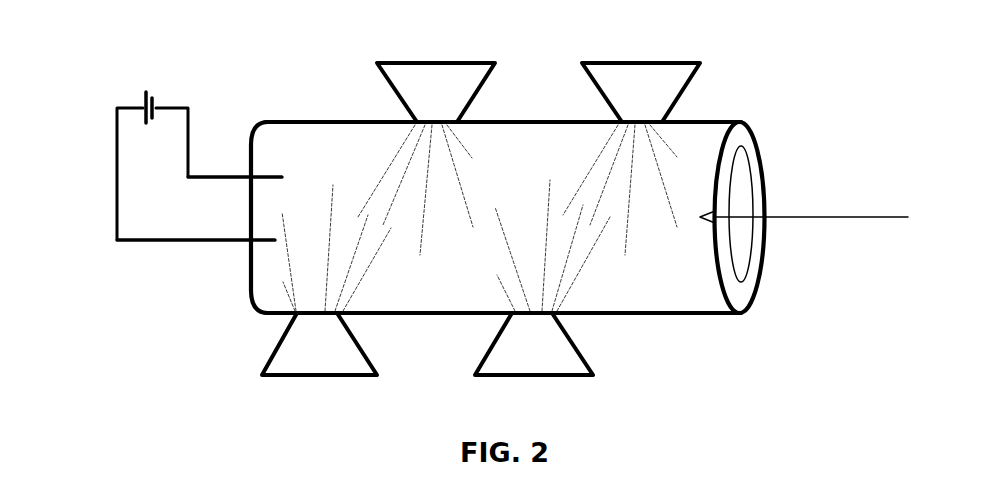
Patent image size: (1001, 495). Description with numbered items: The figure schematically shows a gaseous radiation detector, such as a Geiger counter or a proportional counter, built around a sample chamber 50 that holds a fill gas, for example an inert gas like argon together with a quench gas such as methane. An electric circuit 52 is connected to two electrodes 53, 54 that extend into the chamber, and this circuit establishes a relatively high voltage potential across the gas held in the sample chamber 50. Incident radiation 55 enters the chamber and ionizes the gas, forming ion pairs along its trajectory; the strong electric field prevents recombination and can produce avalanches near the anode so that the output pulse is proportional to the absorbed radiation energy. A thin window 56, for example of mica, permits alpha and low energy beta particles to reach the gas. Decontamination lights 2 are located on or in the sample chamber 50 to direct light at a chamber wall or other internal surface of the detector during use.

The decontamination light 2 is at (405, 76).
The sample chamber 50 is at (692, 127).
The electric circuit 52 is at (117, 147).
The electrode 53 is at (272, 240).
The electrode 54 is at (282, 177).
The incident radiation 55 is at (797, 217).
The window 56 is at (750, 188).